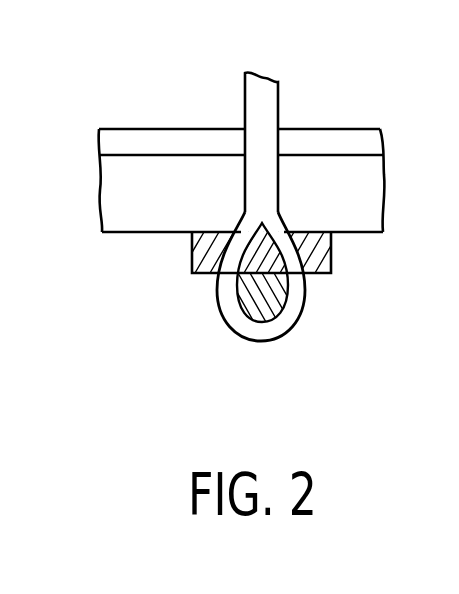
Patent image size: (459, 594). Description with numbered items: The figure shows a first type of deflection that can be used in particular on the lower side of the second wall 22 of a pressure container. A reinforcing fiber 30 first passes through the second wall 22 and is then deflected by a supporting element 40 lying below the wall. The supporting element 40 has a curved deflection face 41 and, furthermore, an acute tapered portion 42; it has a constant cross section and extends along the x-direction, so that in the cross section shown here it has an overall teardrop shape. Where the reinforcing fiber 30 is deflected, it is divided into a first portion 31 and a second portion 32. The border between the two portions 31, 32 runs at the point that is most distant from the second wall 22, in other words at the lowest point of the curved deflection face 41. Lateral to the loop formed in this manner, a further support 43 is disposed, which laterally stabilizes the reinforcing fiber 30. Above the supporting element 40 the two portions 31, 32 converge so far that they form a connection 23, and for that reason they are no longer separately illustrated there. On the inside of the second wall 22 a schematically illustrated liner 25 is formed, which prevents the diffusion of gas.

The second wall 22 is at (135, 188).
The liner 25 is at (115, 137).
The connection 23 is at (253, 108).
The reinforcing fiber 30 is at (241, 224).
The first portion 31 is at (232, 303).
The second portion 32 is at (290, 312).
The supporting element 40 is at (248, 302).
The curved deflection face 41 is at (272, 315).
The acute tapered portion 42 is at (247, 253).
The further support 43 is at (323, 252).